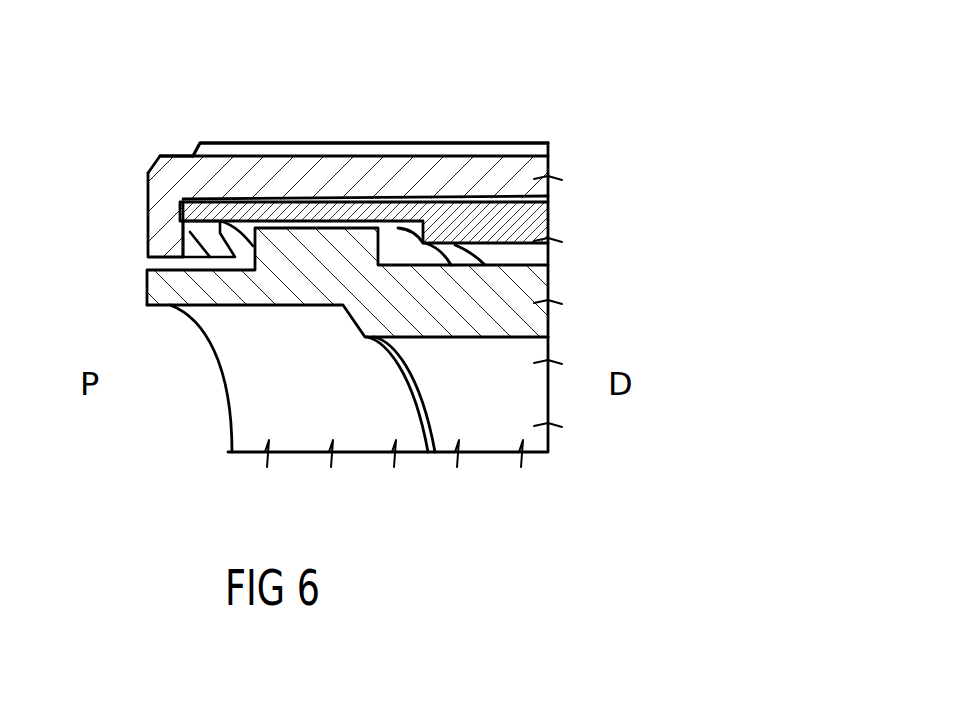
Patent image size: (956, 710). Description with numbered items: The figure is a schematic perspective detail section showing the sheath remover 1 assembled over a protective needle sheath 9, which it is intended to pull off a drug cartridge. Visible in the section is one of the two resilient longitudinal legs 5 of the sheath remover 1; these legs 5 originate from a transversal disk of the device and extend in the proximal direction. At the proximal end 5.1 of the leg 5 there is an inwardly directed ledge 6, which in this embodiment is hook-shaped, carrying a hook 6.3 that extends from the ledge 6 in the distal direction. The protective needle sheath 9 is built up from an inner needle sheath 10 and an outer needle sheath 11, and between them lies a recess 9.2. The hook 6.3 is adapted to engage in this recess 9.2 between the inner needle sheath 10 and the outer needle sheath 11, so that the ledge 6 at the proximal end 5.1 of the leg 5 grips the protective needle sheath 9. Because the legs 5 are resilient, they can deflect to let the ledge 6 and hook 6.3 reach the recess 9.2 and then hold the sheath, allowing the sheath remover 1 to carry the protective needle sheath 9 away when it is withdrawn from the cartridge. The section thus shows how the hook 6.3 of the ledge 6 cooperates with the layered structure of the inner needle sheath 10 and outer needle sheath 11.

The sheath remover 1 is at (300, 128).
The leg 5 is at (540, 163).
The proximal end 5.1 is at (192, 146).
The ledge 6 is at (153, 250).
The hook 6.3 is at (180, 222).
The protective needle sheath 9 is at (475, 426).
The recess 9.2 is at (245, 260).
The inner needle sheath 10 is at (540, 285).
The outer needle sheath 11 is at (542, 218).